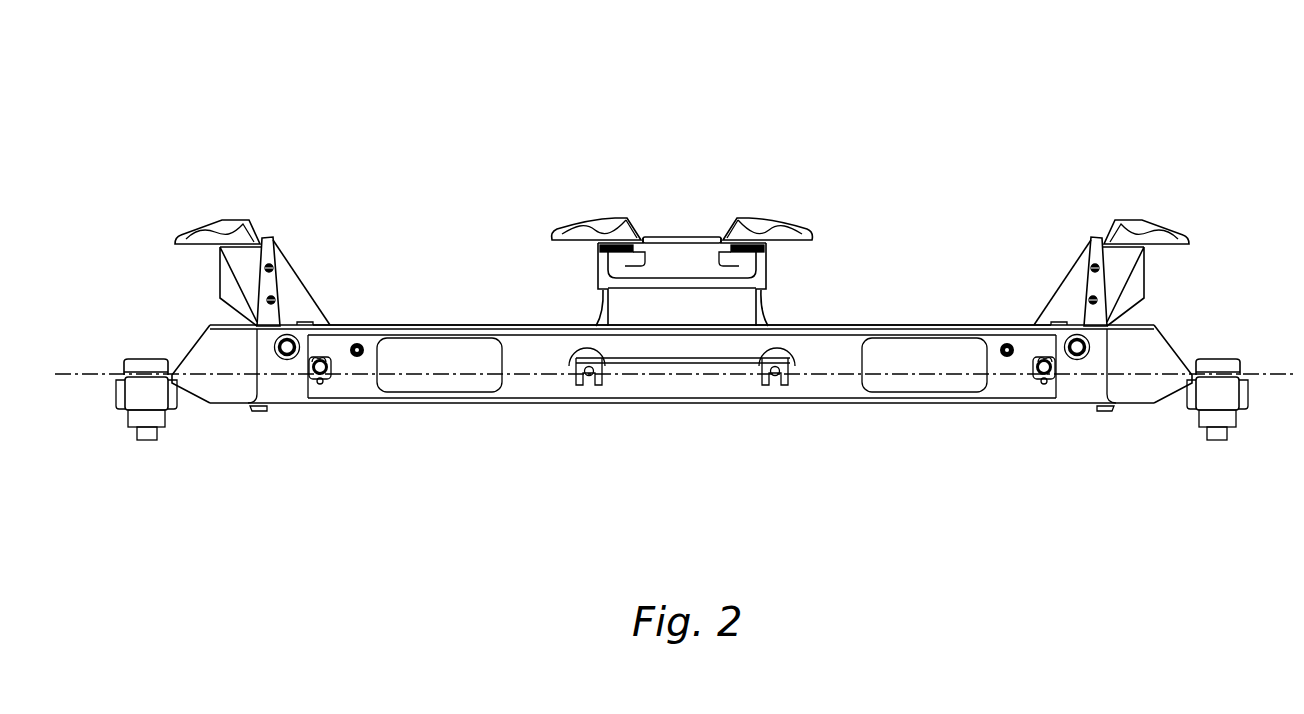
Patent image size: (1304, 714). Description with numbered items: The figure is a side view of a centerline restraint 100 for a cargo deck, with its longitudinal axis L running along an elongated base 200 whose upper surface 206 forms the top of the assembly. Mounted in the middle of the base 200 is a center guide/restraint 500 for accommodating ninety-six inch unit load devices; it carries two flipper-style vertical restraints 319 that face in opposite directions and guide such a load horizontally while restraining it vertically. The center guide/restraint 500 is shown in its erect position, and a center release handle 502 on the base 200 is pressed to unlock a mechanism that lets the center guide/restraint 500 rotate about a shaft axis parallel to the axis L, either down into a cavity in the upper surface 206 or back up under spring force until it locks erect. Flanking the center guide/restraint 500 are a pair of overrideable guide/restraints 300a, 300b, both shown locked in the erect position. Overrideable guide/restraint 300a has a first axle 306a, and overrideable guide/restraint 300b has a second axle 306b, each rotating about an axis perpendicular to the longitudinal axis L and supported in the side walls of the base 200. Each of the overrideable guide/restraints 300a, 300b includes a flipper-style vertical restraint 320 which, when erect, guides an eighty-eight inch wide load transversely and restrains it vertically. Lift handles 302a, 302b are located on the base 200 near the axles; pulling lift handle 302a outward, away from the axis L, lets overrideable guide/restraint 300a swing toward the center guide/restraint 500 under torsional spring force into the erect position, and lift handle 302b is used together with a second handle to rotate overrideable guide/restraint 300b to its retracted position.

The centerline restraint 100 is at (1113, 28).
The base 200 is at (471, 410).
The upper surface 206 is at (484, 323).
The overrideable guide/restraint 300a is at (1120, 268).
The overrideable guide/restraint 300b is at (243, 268).
The lift handle 302a is at (1074, 361).
The lift handle 302b is at (288, 361).
The first axle 306a is at (1023, 370).
The second axle 306b is at (343, 372).
The flipper-style vertical restraint 319 is at (578, 219).
The flipper-style vertical restraint 320 is at (211, 220).
The center guide/restraint 500 is at (691, 258).
The center release handle 502 is at (667, 364).